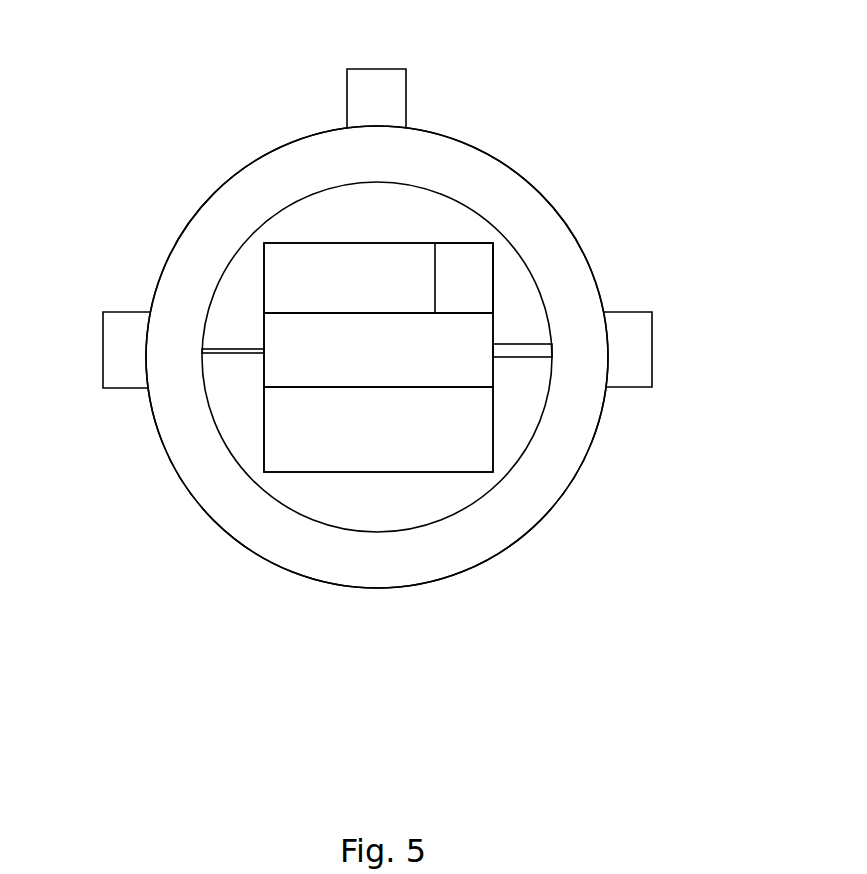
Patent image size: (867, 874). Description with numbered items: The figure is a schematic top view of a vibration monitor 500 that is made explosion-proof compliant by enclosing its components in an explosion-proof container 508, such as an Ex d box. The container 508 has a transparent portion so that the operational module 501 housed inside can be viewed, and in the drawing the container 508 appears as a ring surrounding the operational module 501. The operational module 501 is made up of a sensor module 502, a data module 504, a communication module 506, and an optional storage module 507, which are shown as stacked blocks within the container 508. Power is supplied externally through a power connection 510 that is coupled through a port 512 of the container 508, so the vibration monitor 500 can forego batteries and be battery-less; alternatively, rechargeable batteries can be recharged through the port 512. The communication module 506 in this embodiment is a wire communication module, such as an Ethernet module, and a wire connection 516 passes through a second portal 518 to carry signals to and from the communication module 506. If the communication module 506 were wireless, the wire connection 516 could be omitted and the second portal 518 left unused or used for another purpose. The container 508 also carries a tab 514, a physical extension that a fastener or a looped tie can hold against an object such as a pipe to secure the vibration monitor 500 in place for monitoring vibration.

The vibration monitor 500 is at (530, 47).
The operational module 501 is at (493, 300).
The sensor module 502 is at (405, 364).
The data module 504 is at (405, 436).
The communication module 506 is at (365, 294).
The storage module 507 is at (478, 245).
The explosion-proof container 508 is at (240, 180).
The power connection 510 is at (520, 358).
The port 512 is at (652, 387).
The tab 514 is at (347, 69).
The wire connection 516 is at (223, 349).
The second portal 518 is at (103, 388).